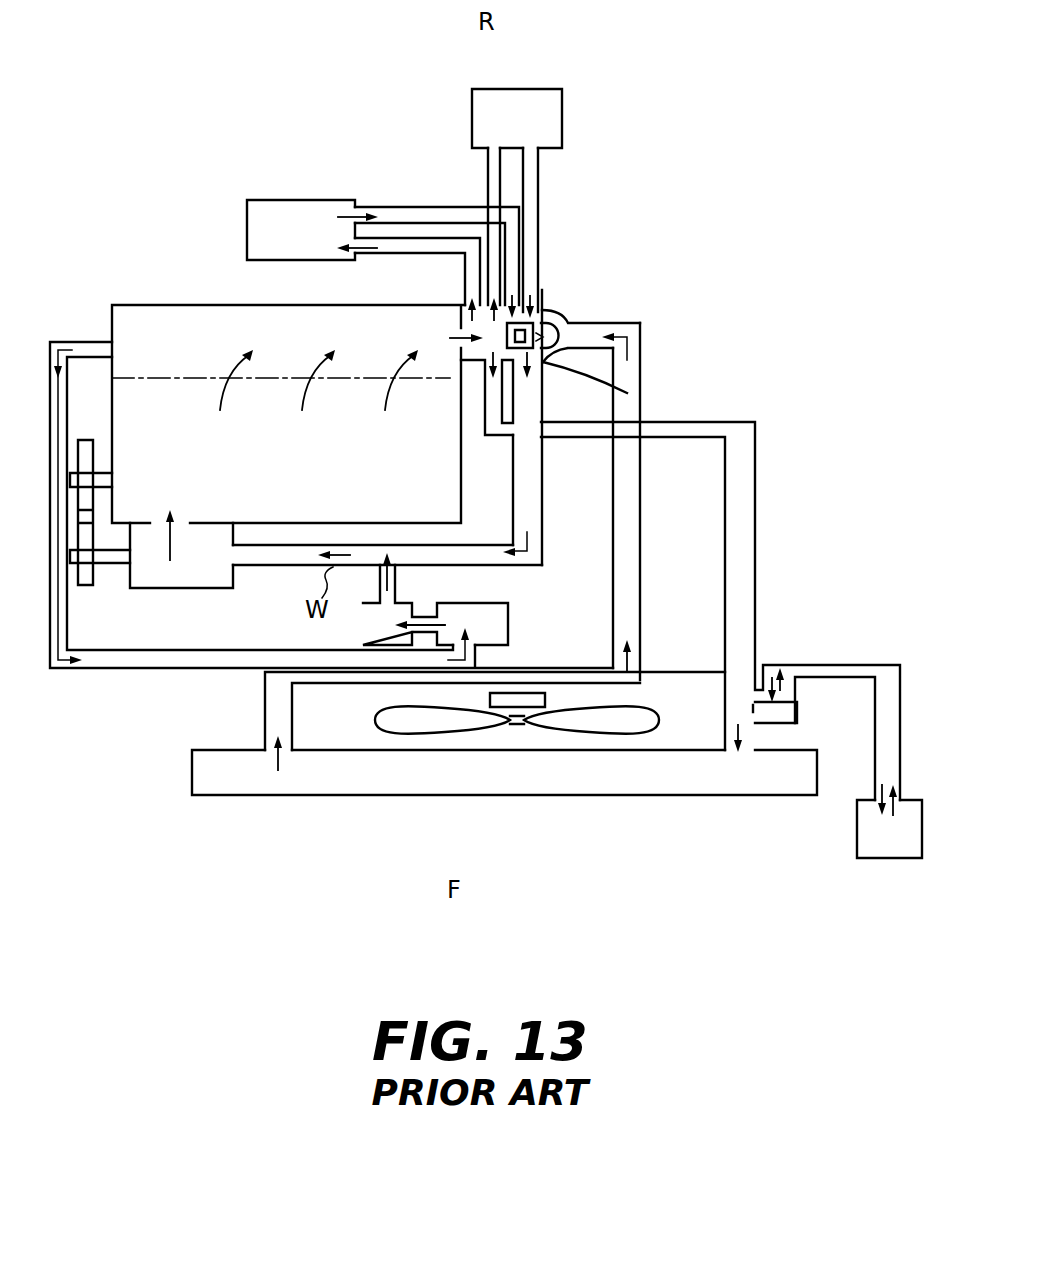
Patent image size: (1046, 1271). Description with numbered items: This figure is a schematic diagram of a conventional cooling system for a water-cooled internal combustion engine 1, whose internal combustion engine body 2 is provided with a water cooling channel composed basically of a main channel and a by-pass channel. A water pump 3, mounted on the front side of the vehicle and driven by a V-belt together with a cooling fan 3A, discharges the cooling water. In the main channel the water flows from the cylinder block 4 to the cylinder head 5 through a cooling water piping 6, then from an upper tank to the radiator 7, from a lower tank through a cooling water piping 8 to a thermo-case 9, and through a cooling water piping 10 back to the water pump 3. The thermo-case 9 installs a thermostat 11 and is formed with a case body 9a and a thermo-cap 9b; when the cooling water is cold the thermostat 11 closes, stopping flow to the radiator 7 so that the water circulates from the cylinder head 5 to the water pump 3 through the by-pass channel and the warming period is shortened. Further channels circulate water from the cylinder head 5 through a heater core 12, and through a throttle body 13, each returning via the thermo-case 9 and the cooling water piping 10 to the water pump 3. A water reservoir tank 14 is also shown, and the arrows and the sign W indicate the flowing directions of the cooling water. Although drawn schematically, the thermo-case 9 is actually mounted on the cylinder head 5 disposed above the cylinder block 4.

The internal combustion engine 1 is at (652, 190).
The internal combustion engine body 2 is at (145, 298).
The water pump 3 is at (150, 588).
The cooling fan 3A is at (625, 733).
The cylinder block 4 is at (240, 477).
The cylinder head 5 is at (182, 360).
The cooling water piping 6 is at (577, 437).
The radiator 7 is at (360, 797).
The cooling water piping 8 is at (648, 556).
The thermo-case 9 is at (543, 310).
The case body 9a is at (627, 393).
The thermo-cap 9b is at (640, 362).
The cooling water piping 10 is at (547, 449).
The thermostat 11 is at (557, 313).
The heater core 12 is at (562, 112).
The throttle body 13 is at (313, 200).
The water reservoir tank 14 is at (857, 830).